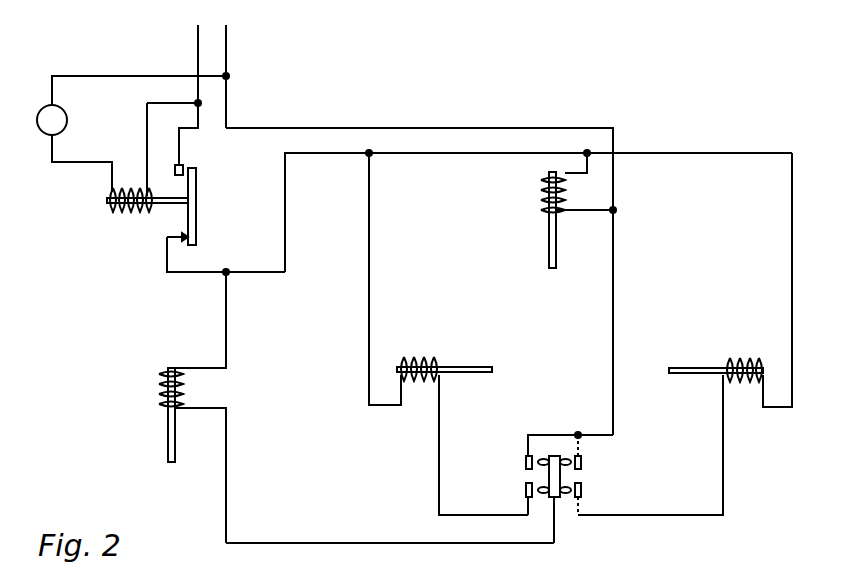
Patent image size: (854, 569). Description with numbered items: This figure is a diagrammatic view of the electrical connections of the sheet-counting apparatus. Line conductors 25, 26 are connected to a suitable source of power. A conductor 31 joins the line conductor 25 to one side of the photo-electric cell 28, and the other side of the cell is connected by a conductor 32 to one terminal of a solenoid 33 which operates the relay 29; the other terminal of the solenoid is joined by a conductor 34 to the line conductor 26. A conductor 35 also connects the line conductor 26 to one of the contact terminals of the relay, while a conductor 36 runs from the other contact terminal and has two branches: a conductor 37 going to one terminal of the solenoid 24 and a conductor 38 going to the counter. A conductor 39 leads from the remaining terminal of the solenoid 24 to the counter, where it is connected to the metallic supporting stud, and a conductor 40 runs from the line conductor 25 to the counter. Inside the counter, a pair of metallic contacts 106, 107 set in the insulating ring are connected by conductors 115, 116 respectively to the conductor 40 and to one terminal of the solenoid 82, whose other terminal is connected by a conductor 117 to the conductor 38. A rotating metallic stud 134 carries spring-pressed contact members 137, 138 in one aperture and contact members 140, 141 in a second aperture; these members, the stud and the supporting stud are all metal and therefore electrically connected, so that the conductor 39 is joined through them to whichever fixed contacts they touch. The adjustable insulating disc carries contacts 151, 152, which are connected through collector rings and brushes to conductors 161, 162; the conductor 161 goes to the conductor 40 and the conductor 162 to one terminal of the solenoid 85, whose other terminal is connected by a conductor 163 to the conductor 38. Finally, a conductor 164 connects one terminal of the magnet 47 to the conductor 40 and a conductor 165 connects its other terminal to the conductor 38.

The solenoid 24 is at (160, 393).
The line conductor 25 is at (228, 38).
The line conductor 26 is at (197, 37).
The photo-electric cell 28 is at (66, 112).
The relay 29 is at (177, 206).
The conductor 31 is at (78, 76).
The conductor 32 is at (65, 165).
The solenoid 33 is at (122, 214).
The conductor 34 is at (146, 130).
The conductor 35 is at (182, 150).
The conductor 36 is at (200, 273).
The conductor 37 is at (228, 326).
The conductor 38 is at (312, 156).
The conductor 39 is at (330, 543).
The line conductor 40 is at (372, 128).
The magnet 47 is at (540, 188).
The solenoid 82 is at (416, 358).
The solenoid 85 is at (738, 358).
The metallic contact 106 is at (525, 462).
The metallic contact 107 is at (525, 490).
The conductor 115 is at (527, 445).
The conductor 116 is at (528, 506).
The conductor 117 is at (370, 293).
The metallic stud 134 is at (556, 500).
The contact member 137 is at (542, 455).
The contact member 138 is at (568, 455).
The contact member 140 is at (542, 497).
The contact member 141 is at (565, 497).
The contact 151 is at (582, 462).
The contact 152 is at (582, 490).
The conductor 161 is at (582, 446).
The conductor 162 is at (608, 514).
The conductor 163 is at (790, 268).
The conductor 164 is at (575, 215).
The conductor 165 is at (574, 178).